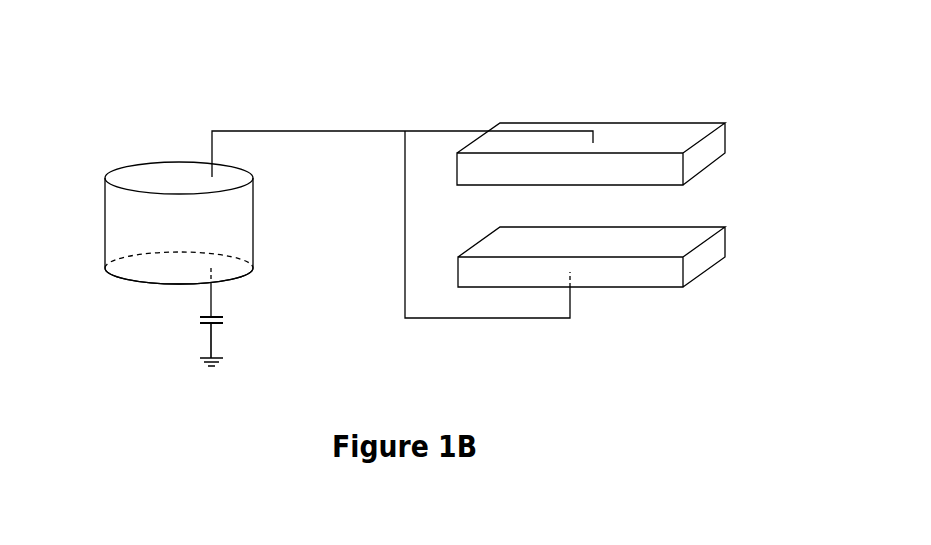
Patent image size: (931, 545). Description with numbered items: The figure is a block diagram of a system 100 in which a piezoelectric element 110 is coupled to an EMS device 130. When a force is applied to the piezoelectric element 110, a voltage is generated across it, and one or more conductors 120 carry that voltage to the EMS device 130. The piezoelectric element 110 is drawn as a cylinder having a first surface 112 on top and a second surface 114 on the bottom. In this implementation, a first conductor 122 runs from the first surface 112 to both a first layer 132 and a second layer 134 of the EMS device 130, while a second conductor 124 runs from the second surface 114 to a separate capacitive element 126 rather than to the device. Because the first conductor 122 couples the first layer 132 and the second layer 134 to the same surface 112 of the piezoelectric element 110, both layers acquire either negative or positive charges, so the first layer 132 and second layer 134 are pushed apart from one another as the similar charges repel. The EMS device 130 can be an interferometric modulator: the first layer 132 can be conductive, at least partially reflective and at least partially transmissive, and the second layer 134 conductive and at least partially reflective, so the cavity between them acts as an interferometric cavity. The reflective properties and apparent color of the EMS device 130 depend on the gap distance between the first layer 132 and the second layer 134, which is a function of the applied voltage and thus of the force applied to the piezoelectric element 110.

The system 100 is at (159, 61).
The piezoelectric element 110 is at (105, 215).
The first surface 112 is at (147, 176).
The second surface 114 is at (143, 293).
The conductors 120 is at (301, 115).
The first conductor 122 is at (381, 131).
The second conductor 124 is at (213, 302).
The capacitive element 126 is at (204, 328).
The EMS device 130 is at (700, 200).
The first layer 132 is at (657, 130).
The second layer 134 is at (657, 288).